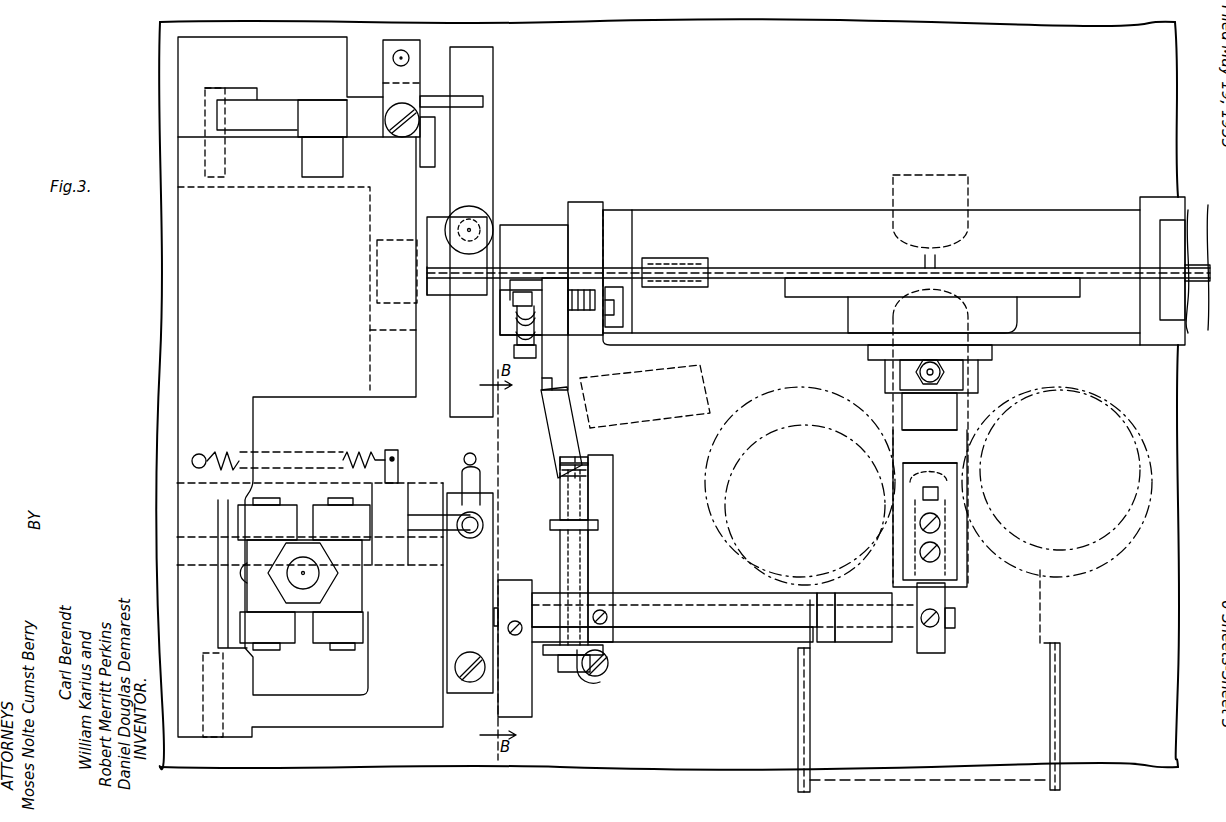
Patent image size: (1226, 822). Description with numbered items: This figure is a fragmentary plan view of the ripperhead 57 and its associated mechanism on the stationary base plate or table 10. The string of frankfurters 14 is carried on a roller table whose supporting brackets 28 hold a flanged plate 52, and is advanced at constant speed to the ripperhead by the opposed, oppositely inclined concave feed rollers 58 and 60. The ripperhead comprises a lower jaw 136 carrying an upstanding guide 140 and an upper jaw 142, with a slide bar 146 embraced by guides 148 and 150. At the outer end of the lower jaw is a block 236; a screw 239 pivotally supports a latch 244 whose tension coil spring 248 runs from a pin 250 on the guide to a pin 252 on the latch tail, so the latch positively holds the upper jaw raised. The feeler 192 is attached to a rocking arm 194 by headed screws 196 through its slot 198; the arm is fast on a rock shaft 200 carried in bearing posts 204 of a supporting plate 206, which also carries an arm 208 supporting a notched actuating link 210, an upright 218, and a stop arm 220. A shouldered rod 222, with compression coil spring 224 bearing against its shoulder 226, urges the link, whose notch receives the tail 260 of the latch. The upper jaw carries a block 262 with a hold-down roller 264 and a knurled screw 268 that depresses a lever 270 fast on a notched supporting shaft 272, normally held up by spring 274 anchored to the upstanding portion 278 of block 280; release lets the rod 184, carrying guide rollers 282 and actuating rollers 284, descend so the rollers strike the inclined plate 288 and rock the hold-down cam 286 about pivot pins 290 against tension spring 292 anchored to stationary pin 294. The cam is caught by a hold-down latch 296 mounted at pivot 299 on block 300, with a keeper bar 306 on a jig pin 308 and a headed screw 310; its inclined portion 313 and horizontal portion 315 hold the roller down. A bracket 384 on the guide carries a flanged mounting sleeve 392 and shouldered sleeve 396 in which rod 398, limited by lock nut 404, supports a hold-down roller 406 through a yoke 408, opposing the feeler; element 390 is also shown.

The stationary base plate or table 10 is at (166, 252).
The string of frankfurters or sausages 14 is at (960, 191).
The supporting brackets 28 is at (800, 708).
The flanged plate 52 is at (1032, 609).
The ripperhead 57 is at (746, 203).
The concave feed roller 58 is at (714, 505).
The concave feed roller 60 is at (1135, 434).
The lower jaw 136 is at (712, 322).
The upstanding guide 140 is at (586, 205).
The upper jaw 142 is at (444, 296).
The slide bar 146 is at (536, 267).
The guide 148 is at (676, 258).
The guide 150 is at (1170, 237).
The rod 184 is at (300, 586).
The feeler 192 is at (888, 452).
The rocking arm 194 is at (938, 602).
The headed screws 196 is at (922, 552).
The slot 198 is at (928, 486).
The rock shaft 200 is at (701, 595).
The bearing posts 204 is at (857, 642).
The supporting plate 206 is at (690, 651).
The arm 208 is at (606, 541).
The notched actuating link 210 is at (590, 483).
The upright 218 is at (551, 662).
The stop arm 220 is at (523, 700).
The shouldered rod 222 is at (568, 518).
The compression coil spring 224 is at (560, 535).
The shoulder 226 is at (598, 523).
The block 236 is at (538, 225).
The screw 239 is at (553, 314).
The latch 244 is at (580, 361).
The tension coil spring 248 is at (512, 328).
The pin 250 is at (522, 291).
The pin 252 is at (513, 355).
The tail 260 is at (548, 373).
The block 262 is at (428, 222).
The hold-down roller 264 is at (380, 275).
The knurled screw 268 is at (466, 208).
The lever 270 is at (490, 158).
The notched supporting shaft 272 is at (197, 567).
The spring 274 is at (463, 486).
The upstanding portion 278 is at (398, 598).
The block 280 is at (170, 573).
The guide rollers 282 is at (250, 517).
The actuating rollers 284 is at (360, 523).
The hold-down cam 286 is at (297, 405).
The inclined plate 288 is at (233, 598).
The pivot pins 290 is at (225, 160).
The tension spring 292 is at (362, 446).
The stationary pin 294 is at (393, 456).
The hold-down latch 296 is at (368, 76).
The pivot 299 is at (437, 130).
The block 300 is at (167, 76).
The keeper bar 306 is at (417, 92).
The jig pin 308 is at (396, 57).
The headed screw 310 is at (392, 106).
The inclined portion 313 is at (370, 356).
The horizontal portion 315 is at (370, 322).
The bracket 384 is at (810, 346).
The block 390 is at (849, 312).
The flanged mounting sleeve 392 is at (876, 392).
The shouldered sleeve 396 is at (898, 372).
The rod 398 is at (930, 360).
The lock nut 404 is at (962, 372).
The hold-down roller 406 is at (919, 399).
The yoke 408 is at (1000, 392).